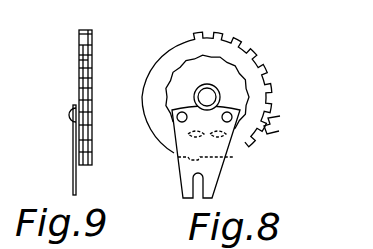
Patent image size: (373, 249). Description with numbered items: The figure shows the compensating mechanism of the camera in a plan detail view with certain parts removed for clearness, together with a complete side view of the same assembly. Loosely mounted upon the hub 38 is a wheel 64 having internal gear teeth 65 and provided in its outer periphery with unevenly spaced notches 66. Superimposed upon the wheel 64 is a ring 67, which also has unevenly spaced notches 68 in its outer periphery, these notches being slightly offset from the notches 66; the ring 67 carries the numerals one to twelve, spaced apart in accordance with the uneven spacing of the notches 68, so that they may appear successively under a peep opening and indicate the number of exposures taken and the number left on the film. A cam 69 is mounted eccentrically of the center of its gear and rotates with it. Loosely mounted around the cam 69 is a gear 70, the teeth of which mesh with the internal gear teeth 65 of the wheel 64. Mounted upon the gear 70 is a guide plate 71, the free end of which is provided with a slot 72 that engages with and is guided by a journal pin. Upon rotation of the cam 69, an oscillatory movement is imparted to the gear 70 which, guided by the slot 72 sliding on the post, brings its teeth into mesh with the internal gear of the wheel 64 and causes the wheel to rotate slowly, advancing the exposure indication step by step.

In FIG. 8, the hub 38 is at (246, 88).
In FIG. 9, the wheel 64 is at (92, 97).
In FIG. 8, the wheel 64 is at (246, 70).
In FIG. 8, the internal gear teeth 65 is at (250, 105).
In FIG. 9, the notches 66 is at (109, 97).
In FIG. 8, the notches 66 is at (280, 116).
In FIG. 9, the ring 67 is at (80, 81).
In FIG. 9, the notches 68 is at (80, 70).
In FIG. 8, the cam 69 is at (207, 97).
In FIG. 8, the gear 70 is at (187, 73).
In FIG. 8, the guide plate 71 is at (208, 143).
In FIG. 8, the slot 72 is at (197, 188).